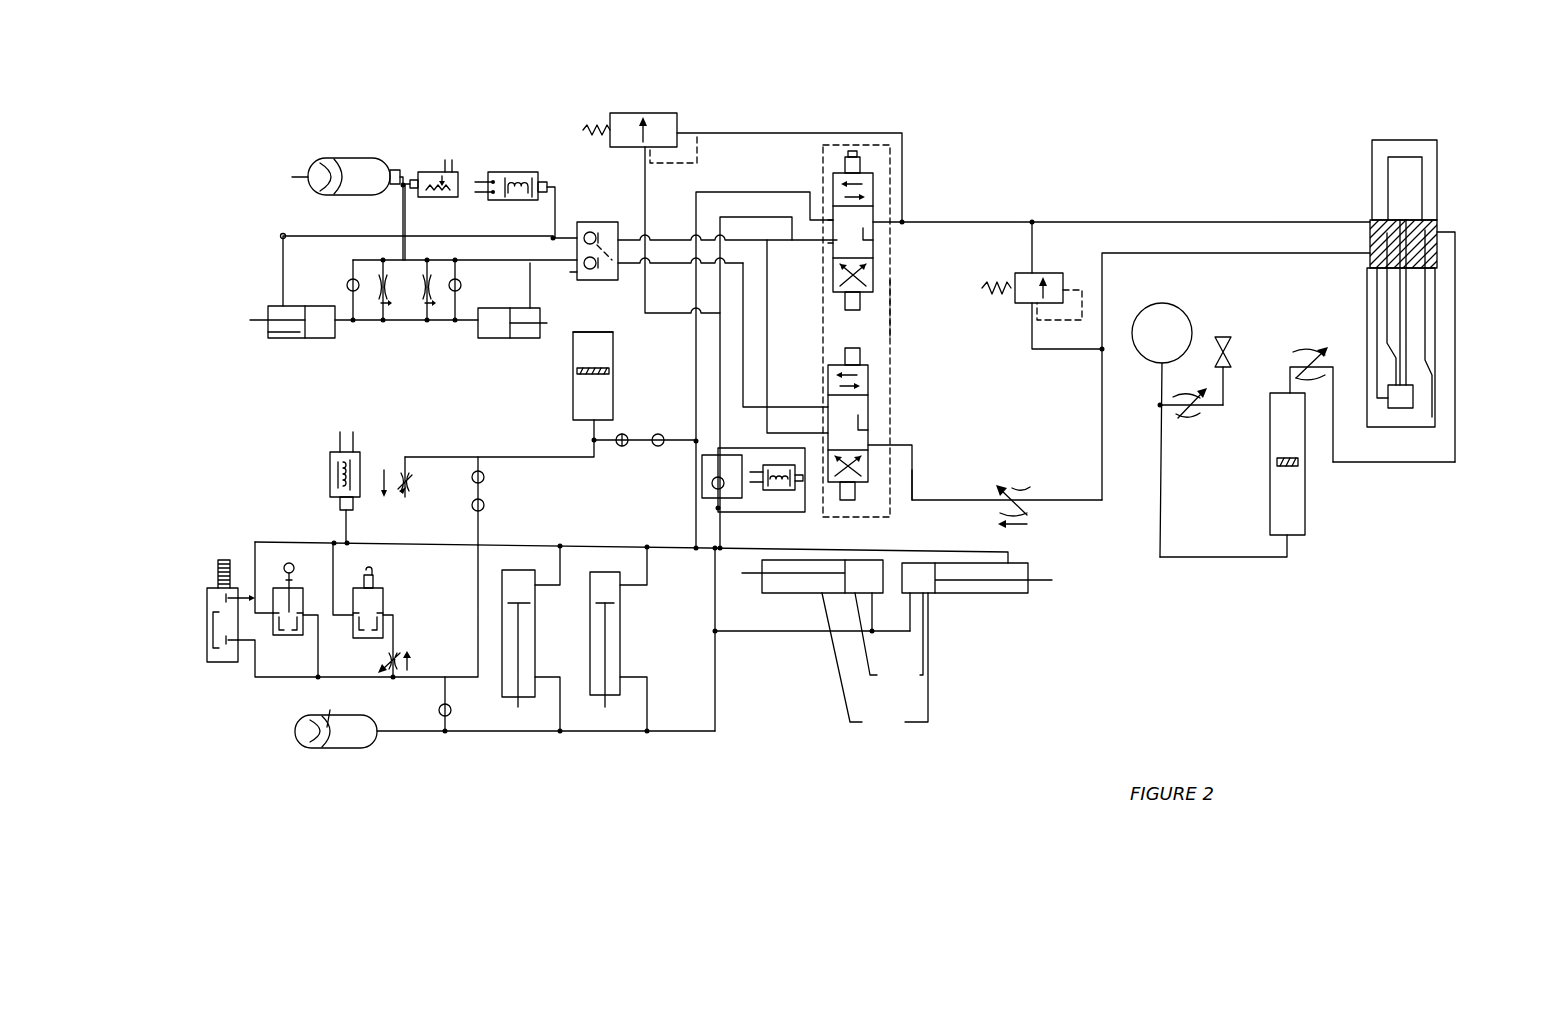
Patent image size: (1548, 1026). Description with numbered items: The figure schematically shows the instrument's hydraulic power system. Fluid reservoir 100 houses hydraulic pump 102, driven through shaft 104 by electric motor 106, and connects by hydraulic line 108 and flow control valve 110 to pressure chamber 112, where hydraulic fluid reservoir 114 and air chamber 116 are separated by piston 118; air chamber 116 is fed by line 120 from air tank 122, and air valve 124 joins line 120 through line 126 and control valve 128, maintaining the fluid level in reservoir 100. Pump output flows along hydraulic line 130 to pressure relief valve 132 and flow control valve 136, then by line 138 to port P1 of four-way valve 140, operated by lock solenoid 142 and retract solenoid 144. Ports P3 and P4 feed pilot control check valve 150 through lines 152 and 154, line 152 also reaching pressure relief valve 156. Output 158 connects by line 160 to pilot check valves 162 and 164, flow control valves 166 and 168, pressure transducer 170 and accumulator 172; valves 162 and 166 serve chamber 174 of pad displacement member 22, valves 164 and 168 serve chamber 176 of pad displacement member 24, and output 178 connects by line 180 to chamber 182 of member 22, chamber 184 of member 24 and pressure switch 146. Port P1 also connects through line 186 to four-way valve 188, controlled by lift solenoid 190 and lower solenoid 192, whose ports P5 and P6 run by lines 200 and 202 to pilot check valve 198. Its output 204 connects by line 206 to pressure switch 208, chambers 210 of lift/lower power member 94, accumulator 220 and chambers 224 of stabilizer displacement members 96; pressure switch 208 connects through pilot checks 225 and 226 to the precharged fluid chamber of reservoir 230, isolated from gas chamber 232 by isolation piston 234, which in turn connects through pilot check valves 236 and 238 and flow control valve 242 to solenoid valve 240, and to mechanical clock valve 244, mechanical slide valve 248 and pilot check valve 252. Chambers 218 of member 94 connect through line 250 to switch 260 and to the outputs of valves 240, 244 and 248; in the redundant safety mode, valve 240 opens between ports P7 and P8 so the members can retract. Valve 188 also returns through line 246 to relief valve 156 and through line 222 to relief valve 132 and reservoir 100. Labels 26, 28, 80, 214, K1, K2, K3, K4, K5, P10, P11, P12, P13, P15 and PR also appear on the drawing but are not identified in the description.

The pad displacement member 22 is at (475, 337).
The pad displacement member 24 is at (292, 338).
The piston rod 26 is at (549, 332).
The piston rod 28 is at (258, 314).
The piston rod 80 is at (546, 637).
The lift/lower power member 94 is at (502, 696).
The stabilizer displacement members 96 is at (897, 647).
The fluid reservoir 100 is at (1428, 360).
The hydraulic pump 102 is at (1413, 406).
The shaft 104 is at (1403, 287).
The electric motor 106 is at (1413, 163).
The hydraulic line 108 is at (1390, 463).
The flow control valve 110 is at (1372, 347).
The pressure chamber 112 is at (1307, 519).
The hydraulic fluid reservoir 114 is at (1268, 436).
The air chamber 116 is at (1268, 500).
The piston 118 is at (1302, 467).
The line 120 is at (1203, 557).
The air tank 122 is at (1150, 305).
The air valve 124 is at (1246, 313).
The line 126 is at (1226, 379).
The control valve 128 is at (1191, 414).
The hydraulic line 130 is at (1278, 256).
The pressure relief valve 132 is at (1056, 272).
The flow control valve 136 is at (1011, 493).
The line 138 is at (928, 499).
The four-way valve 140 is at (872, 385).
The lock solenoid 142 is at (861, 353).
The retract solenoid 144 is at (858, 502).
The pressure switch 146 is at (520, 172).
The pilot control check valve 150 is at (600, 222).
The line 152 is at (676, 266).
The line 154 is at (676, 238).
The pressure relief valve 156 is at (665, 116).
The output 158 is at (601, 283).
The line 160 is at (515, 262).
The pilot check valve 162 is at (473, 290).
The pilot check valve 164 is at (349, 280).
The flow control valve 166 is at (425, 306).
The flow control valve 168 is at (384, 306).
The pressure transducer 170 is at (445, 160).
The accumulator 172 is at (357, 158).
The chamber 174 is at (492, 325).
The chamber 176 is at (318, 312).
The output 178 is at (577, 237).
The line 180 is at (347, 235).
The chamber 182 is at (531, 303).
The chamber 184 is at (282, 332).
The line 186 is at (891, 311).
The four-way valve 188 is at (873, 208).
The lift solenoid 190 is at (861, 158).
The lower solenoid 192 is at (845, 306).
The pilot check valve 198 is at (727, 500).
The line 200 is at (795, 244).
The line 202 is at (782, 192).
The output 204 is at (717, 497).
The line 206 is at (797, 513).
The pressure switch 208 is at (776, 488).
The chambers 210 is at (582, 613).
The valve block 214 is at (693, 471).
The chambers 218 is at (583, 530).
The accumulator 220 is at (337, 750).
The line 222 is at (1197, 225).
The chambers 224 is at (889, 639).
The pilot check valve 225 is at (658, 434).
The pilot check valve 226 is at (623, 447).
The reservoir 230 is at (614, 345).
The gas chamber 232 is at (592, 333).
The isolation piston 234 is at (573, 371).
The pilot check valve 236 is at (485, 477).
The pilot check valve 238 is at (573, 408).
The solenoid valve 240 is at (387, 590).
The flow control valve 242 is at (416, 660).
The mechanical clock valve 244 is at (358, 611).
The line 246 is at (862, 137).
The mechanical slide valve 248 is at (208, 586).
The line 250 is at (442, 541).
The pilot check valve 252 is at (438, 711).
The switch 260 is at (328, 453).
The solenoid K1 is at (851, 337).
The solenoid K2 is at (851, 507).
The solenoid K3 is at (857, 153).
The solenoid K4 is at (852, 320).
The solenoid K5 is at (368, 566).
The port P1 is at (876, 443).
The port P3 is at (797, 336).
The port P4 is at (785, 336).
The port P5 is at (806, 232).
The port P6 is at (796, 204).
The port P7 is at (399, 604).
The port P8 is at (339, 592).
The port P10 is at (312, 603).
The port P11 is at (272, 613).
The port P12 is at (253, 597).
The port P13 is at (242, 637).
The port P15 is at (245, 590).
The pressure regulator port PR is at (247, 652).